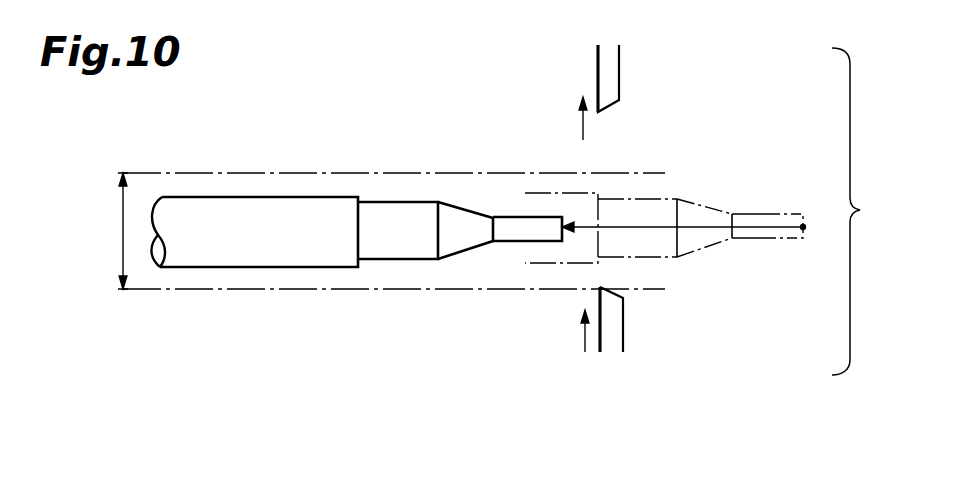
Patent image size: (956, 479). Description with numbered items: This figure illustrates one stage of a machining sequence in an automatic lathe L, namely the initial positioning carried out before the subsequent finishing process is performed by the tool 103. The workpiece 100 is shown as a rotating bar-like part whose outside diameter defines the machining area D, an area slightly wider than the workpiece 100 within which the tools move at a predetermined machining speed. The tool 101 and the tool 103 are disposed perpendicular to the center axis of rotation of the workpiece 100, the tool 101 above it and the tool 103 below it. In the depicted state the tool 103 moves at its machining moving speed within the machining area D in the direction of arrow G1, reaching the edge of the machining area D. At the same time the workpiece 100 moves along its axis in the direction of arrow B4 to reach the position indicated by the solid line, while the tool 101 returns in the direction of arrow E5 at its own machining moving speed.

The workpiece 100 is at (235, 257).
The tool 101 is at (615, 73).
The tool 103 is at (617, 328).
The arrow B4 is at (763, 226).
The machining area D is at (123, 233).
The automatic lathe L is at (857, 211).
The arrow E5 is at (583, 125).
The arrow G1 is at (585, 335).